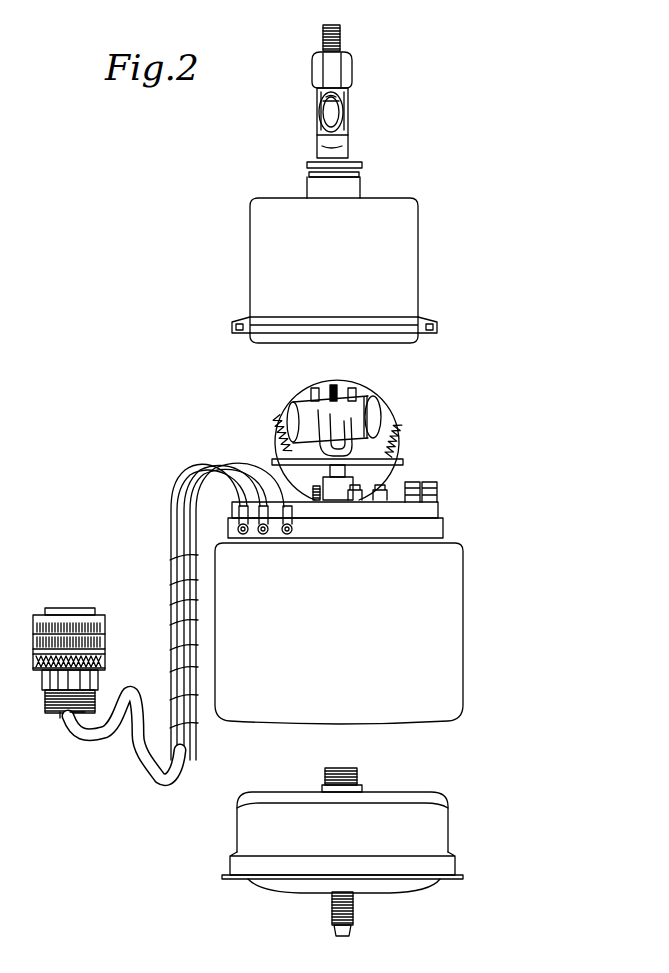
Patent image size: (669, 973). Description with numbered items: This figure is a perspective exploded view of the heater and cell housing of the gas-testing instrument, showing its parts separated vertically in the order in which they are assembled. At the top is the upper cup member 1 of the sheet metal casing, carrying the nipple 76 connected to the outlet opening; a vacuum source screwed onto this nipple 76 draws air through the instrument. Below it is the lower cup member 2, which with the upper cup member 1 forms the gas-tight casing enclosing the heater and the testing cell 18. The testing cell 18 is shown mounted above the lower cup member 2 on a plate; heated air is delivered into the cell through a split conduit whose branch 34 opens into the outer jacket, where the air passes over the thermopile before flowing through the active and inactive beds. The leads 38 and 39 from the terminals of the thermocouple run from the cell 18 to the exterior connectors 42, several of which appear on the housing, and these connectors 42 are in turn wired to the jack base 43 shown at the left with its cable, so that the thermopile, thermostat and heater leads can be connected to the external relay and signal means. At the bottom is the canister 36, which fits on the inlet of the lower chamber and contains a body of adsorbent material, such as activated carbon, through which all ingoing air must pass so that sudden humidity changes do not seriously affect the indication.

The nipple 76 is at (342, 147).
The upper cup member 1 is at (250, 257).
The testing cell 18 is at (383, 398).
The lead 38 is at (282, 435).
The lead 39 is at (393, 438).
The conduit branch 34 is at (315, 449).
The exterior connector 42 is at (232, 531).
The jack base 43 is at (102, 662).
The lower cup member 2 is at (450, 662).
The canister 36 is at (403, 857).